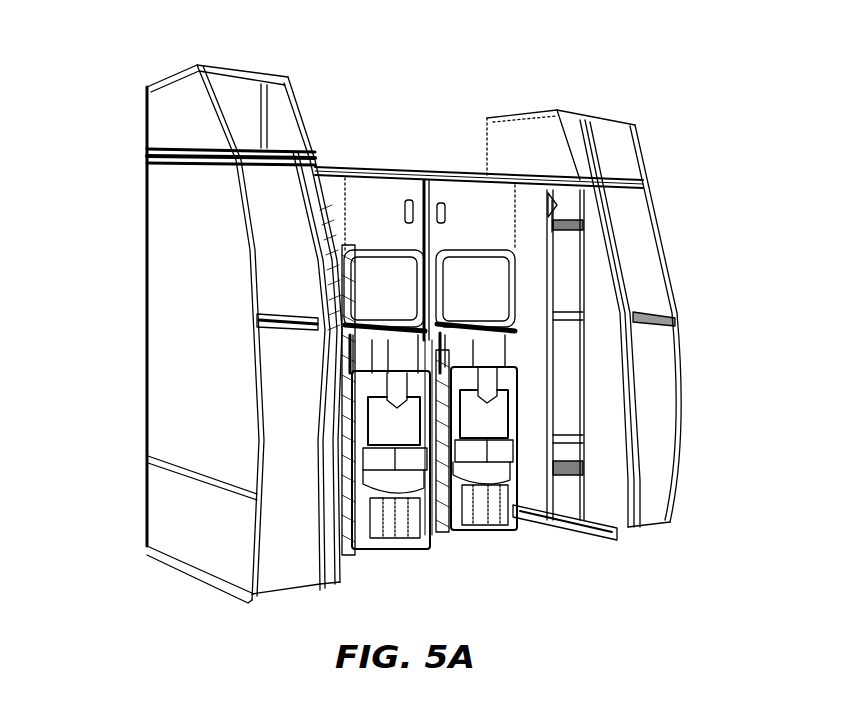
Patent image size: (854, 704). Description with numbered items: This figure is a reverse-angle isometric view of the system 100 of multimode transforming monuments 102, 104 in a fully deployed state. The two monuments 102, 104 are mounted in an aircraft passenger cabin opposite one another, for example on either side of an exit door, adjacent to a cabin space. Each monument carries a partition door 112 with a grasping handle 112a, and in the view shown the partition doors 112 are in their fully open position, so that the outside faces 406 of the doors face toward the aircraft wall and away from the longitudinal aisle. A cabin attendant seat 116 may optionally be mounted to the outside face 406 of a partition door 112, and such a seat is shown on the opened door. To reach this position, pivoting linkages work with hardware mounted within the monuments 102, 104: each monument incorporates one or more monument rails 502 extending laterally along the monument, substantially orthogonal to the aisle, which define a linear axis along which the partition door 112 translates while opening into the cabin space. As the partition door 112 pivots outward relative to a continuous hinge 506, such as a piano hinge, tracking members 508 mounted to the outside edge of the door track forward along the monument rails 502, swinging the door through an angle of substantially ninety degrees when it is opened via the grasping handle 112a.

The system of multimode transforming monuments 100 is at (84, 58).
The monument 102 is at (538, 137).
The monument 104 is at (167, 140).
The partition door 112 is at (352, 210).
The grasping handle 112a is at (405, 212).
The cabin attendant seat 116 is at (475, 510).
The outside face 406 is at (475, 222).
The monument rail 502 is at (580, 228).
The continuous hinge 506 is at (550, 403).
The tracking member 508 is at (552, 200).